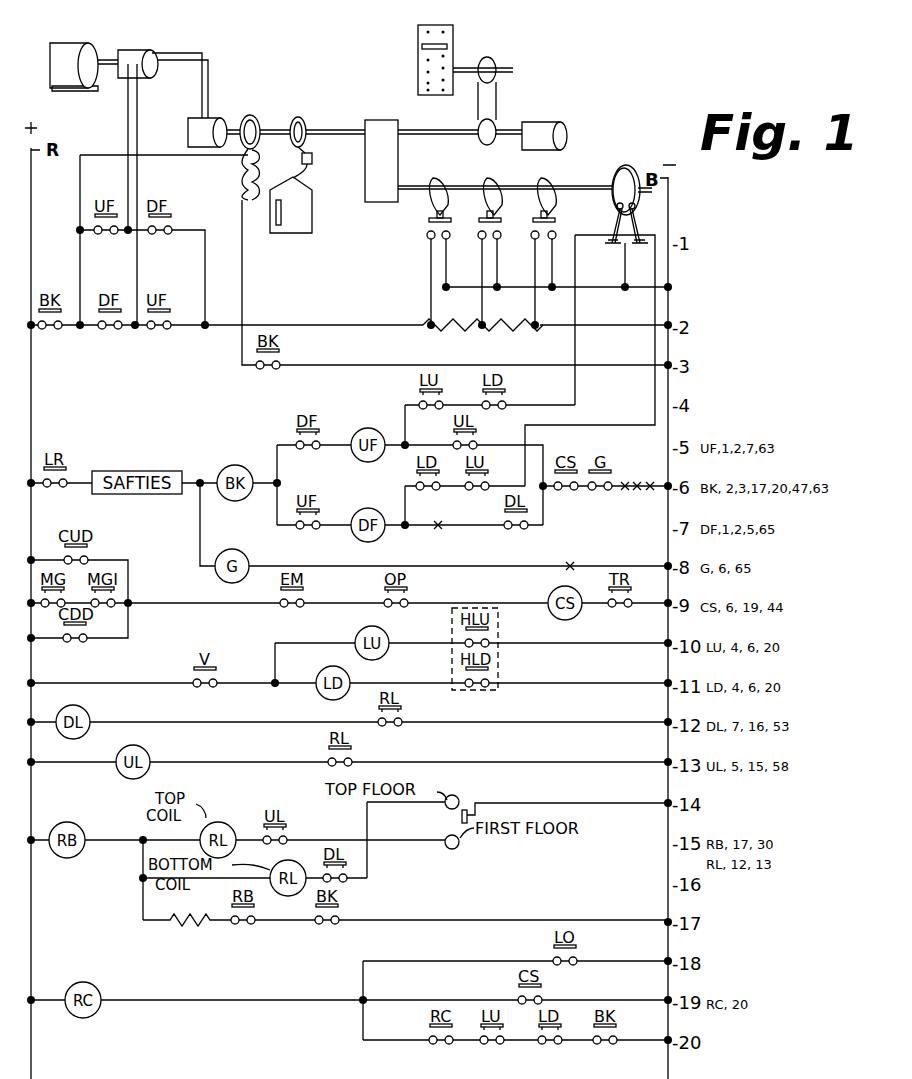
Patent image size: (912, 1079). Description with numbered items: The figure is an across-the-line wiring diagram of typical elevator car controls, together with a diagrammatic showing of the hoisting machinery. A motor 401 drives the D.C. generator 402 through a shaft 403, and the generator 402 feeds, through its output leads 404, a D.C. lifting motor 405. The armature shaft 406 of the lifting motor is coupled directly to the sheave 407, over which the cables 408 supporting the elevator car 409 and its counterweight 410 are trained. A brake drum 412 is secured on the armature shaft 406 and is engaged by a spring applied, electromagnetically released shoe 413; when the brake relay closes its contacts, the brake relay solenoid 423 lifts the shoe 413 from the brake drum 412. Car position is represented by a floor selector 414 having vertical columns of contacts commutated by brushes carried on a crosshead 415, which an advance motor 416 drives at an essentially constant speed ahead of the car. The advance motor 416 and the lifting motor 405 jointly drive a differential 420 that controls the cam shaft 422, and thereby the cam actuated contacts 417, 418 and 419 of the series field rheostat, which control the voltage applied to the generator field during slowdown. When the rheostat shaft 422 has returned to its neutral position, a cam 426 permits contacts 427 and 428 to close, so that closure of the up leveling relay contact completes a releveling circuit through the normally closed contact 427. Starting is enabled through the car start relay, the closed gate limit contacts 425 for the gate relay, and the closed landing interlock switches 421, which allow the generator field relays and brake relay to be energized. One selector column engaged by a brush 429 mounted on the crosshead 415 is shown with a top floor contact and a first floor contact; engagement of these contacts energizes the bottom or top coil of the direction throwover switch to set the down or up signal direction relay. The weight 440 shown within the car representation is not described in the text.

The motor 401 is at (56, 47).
The D.C. generator 402 is at (139, 50).
The shaft 403 is at (106, 58).
The output leads 404 is at (210, 72).
The D.C. lifting motor 405 is at (189, 126).
The armature shaft 406 is at (242, 124).
The sheave 407 is at (300, 126).
The cables 408 is at (300, 176).
The elevator car 409 is at (312, 212).
The counterweight 410 is at (313, 160).
The brake drum 412 is at (250, 114).
The shoe 413 is at (269, 130).
The floor selector 414 is at (453, 57).
The crosshead 415 is at (449, 47).
The advance motor 416 is at (550, 122).
The cam actuated contact 417 is at (437, 210).
The cam actuated contact 418 is at (490, 208).
The cam actuated contact 419 is at (544, 208).
The differential 420 is at (381, 120).
The landing interlock switches 421 is at (635, 478).
The cam shaft 422 is at (600, 186).
The brake relay solenoid 423 is at (246, 184).
The gate contacts 425 is at (572, 564).
The cam 426 is at (621, 168).
The contact 427 is at (614, 246).
The contact 428 is at (622, 258).
The brush 429 is at (565, 800).
The weight 440 is at (280, 226).